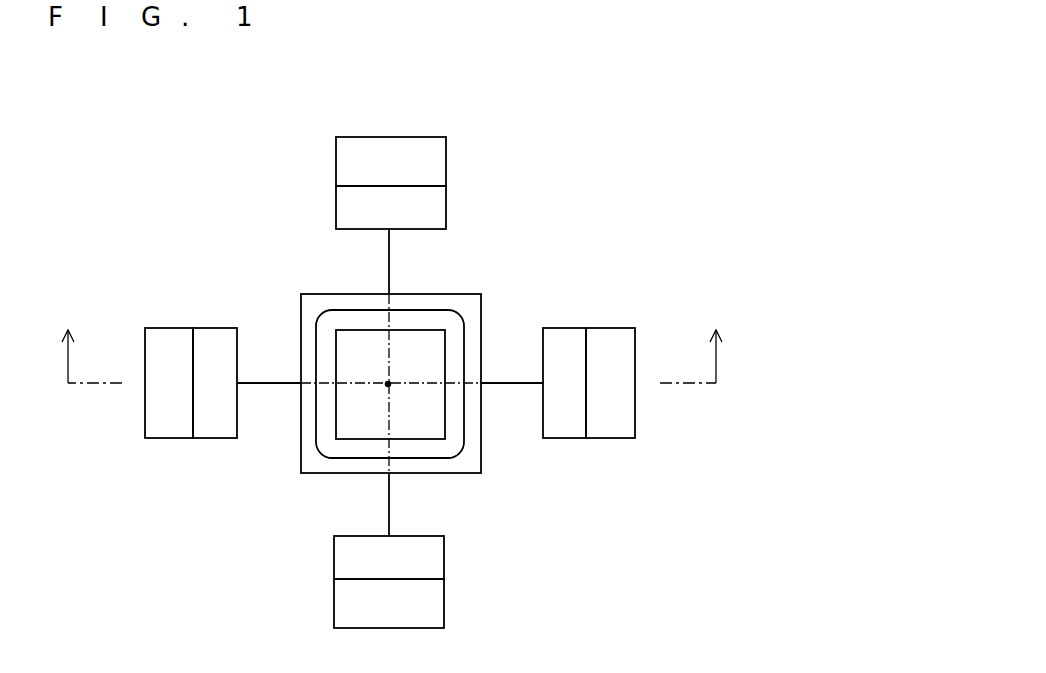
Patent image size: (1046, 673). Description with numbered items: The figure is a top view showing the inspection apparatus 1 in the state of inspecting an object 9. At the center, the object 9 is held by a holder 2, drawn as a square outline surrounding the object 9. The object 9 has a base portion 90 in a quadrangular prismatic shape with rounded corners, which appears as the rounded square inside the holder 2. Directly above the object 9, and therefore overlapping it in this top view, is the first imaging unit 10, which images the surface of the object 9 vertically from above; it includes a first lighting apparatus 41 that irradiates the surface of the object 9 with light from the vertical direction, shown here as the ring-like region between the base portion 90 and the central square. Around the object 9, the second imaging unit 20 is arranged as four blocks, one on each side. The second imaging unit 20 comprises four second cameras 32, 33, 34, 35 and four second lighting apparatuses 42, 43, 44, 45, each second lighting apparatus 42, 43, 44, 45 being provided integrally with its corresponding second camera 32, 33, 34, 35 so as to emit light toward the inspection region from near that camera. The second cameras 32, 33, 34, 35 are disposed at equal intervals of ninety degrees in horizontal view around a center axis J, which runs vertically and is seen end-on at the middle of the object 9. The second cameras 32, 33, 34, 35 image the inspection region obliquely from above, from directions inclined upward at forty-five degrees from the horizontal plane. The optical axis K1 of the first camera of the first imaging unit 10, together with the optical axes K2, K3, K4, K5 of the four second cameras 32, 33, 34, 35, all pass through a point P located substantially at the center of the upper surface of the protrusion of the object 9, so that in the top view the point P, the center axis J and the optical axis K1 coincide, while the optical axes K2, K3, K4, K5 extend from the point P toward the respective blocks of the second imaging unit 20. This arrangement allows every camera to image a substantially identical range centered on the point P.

The inspection apparatus 1 is at (706, 143).
The holder 2 is at (476, 467).
The object 9 is at (466, 409).
The base portion 90 is at (452, 424).
The first imaging unit 10 is at (332, 429).
The second imaging unit 20 is at (515, 150).
The second camera 33 is at (447, 157).
The second lighting apparatus 43 is at (447, 205).
The second lighting apparatus 45 is at (445, 553).
The second camera 35 is at (445, 600).
The second camera 34 is at (168, 328).
The second lighting apparatus 44 is at (214, 328).
The second lighting apparatus 42 is at (564, 328).
The second camera 32 is at (610, 328).
The first lighting apparatus 41 is at (440, 325).
The point P is at (336, 322).
The optical axis K1 is at (336, 322).
The center axis J is at (388, 384).
The optical axis K2 is at (505, 379).
The optical axis K3 is at (392, 256).
The optical axis K4 is at (265, 379).
The optical axis K5 is at (392, 508).